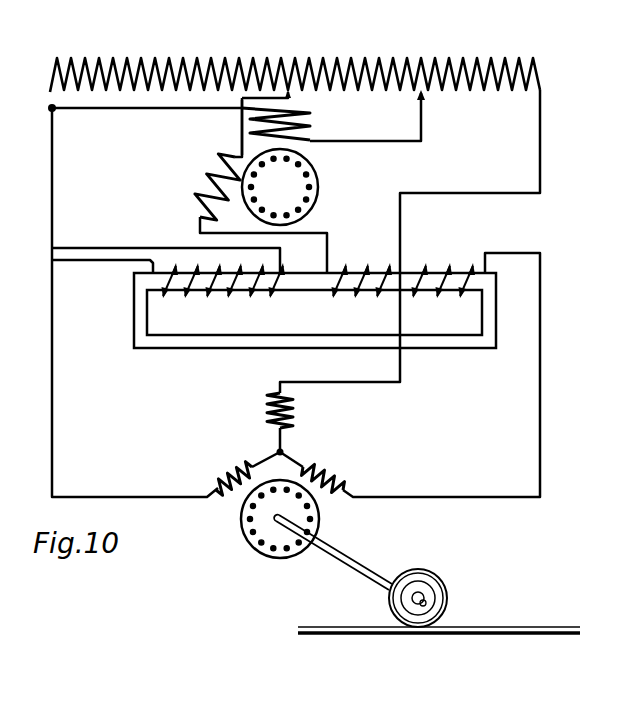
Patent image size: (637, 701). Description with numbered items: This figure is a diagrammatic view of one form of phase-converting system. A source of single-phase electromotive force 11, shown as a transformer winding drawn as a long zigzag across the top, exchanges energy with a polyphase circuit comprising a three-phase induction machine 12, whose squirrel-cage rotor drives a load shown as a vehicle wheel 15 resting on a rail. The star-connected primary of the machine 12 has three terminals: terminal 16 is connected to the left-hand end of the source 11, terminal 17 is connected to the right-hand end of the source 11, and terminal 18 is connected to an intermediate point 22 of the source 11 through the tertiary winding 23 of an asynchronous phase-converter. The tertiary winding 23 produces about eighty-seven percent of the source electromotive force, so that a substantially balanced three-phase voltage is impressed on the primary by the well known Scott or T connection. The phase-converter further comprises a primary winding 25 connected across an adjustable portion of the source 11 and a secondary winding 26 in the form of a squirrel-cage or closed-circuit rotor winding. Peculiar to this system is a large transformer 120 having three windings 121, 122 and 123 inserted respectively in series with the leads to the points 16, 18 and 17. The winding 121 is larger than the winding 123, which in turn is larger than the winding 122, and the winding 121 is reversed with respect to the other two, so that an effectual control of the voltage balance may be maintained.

The source of single-phase electromotive force 11 is at (343, 62).
The intermediate point 22 is at (240, 116).
The tertiary winding 23 is at (201, 190).
The primary winding 25 is at (313, 128).
The secondary winding 26 is at (316, 187).
The large transformer 120 is at (497, 321).
The winding 121 is at (210, 273).
The winding 122 is at (345, 273).
The winding 123 is at (420, 273).
The terminal 18 is at (285, 392).
The three-phase induction machine 12 is at (330, 448).
The terminal 16 is at (213, 489).
The terminal 17 is at (333, 479).
The vehicle wheel 15 is at (428, 590).